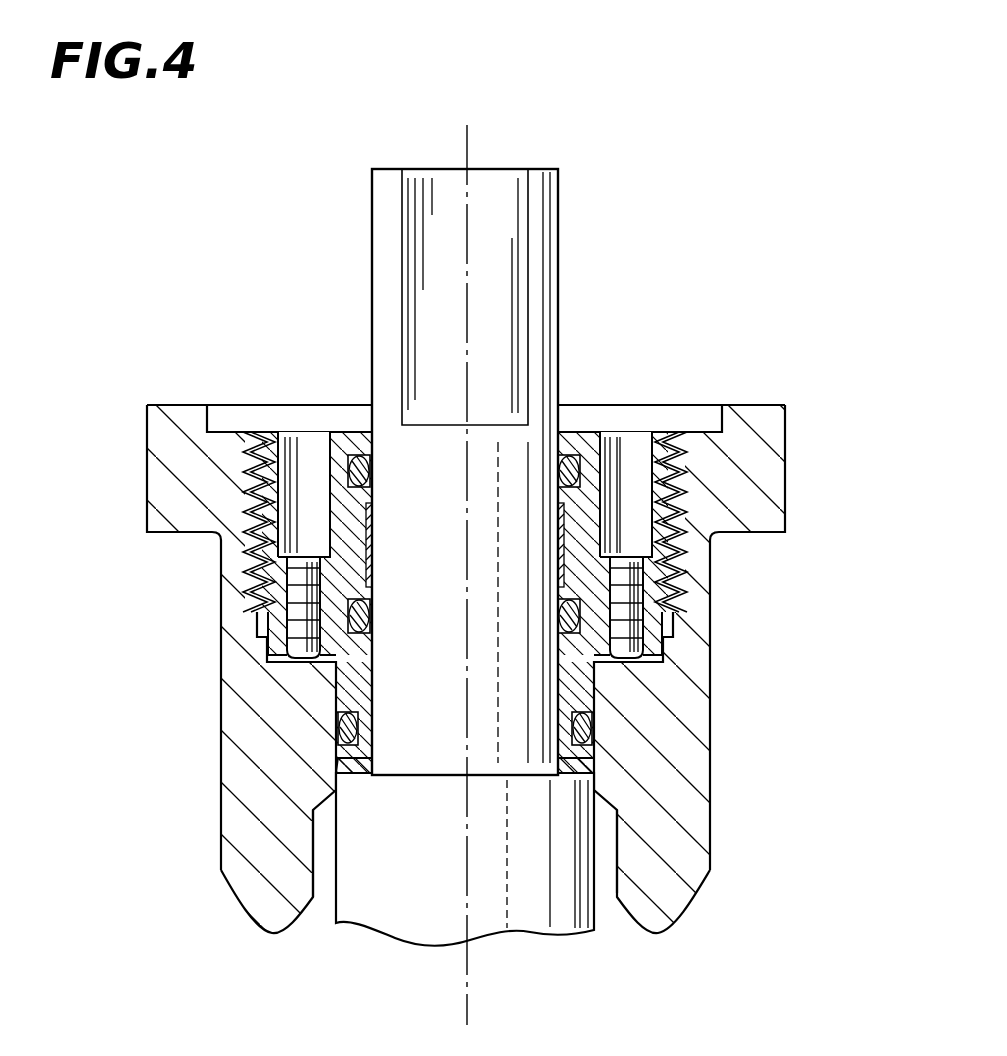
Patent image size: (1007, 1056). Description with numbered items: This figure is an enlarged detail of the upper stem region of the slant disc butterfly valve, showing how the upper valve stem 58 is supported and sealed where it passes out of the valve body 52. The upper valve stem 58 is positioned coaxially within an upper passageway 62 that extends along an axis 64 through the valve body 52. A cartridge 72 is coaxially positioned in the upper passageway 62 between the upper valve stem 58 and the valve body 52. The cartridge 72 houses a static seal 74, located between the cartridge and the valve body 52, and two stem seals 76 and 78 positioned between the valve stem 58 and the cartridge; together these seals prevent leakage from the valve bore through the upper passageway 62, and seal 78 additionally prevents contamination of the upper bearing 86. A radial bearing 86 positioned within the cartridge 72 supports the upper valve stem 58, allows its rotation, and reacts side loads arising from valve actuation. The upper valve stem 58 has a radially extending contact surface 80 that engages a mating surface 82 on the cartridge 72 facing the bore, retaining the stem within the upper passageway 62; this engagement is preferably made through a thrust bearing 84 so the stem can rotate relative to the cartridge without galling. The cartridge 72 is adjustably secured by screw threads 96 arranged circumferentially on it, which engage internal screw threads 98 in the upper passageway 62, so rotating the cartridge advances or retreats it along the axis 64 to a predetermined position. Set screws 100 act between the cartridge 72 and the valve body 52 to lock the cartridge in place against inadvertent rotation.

The valve body 52 is at (647, 887).
The upper valve stem 58 is at (507, 442).
The upper passageway 62 is at (603, 823).
The axis 64 is at (467, 157).
The cartridge 72 is at (583, 683).
The static seal 74 is at (583, 745).
The stem seal 76 is at (655, 623).
The stem seal 78 is at (592, 470).
The contact surface 80 is at (366, 765).
The mating surface 82 is at (352, 768).
The thrust bearing 84 is at (565, 772).
The radial bearing 86 is at (370, 543).
The screw threads 96 is at (680, 495).
The internal screw threads 98 is at (645, 573).
The set screws 100 is at (293, 620).